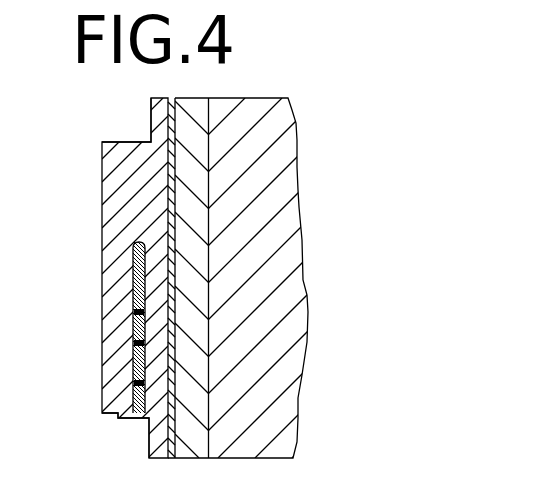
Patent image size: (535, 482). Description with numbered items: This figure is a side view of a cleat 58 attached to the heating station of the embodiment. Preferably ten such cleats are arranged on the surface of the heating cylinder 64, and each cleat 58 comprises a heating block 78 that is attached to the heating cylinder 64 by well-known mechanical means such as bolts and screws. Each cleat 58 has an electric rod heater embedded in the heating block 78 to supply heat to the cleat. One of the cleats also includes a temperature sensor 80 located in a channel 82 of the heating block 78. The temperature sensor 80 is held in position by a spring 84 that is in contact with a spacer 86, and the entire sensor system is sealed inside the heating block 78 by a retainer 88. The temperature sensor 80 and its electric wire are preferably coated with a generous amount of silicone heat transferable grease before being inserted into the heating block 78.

The cleat 58 is at (120, 141).
The heating cylinder 64 is at (192, 102).
The heating block 78 is at (122, 187).
The temperature sensor 80 is at (135, 267).
The channel 82 is at (135, 343).
The spring 84 is at (135, 312).
The spacer 86 is at (135, 383).
The retainer 88 is at (130, 419).